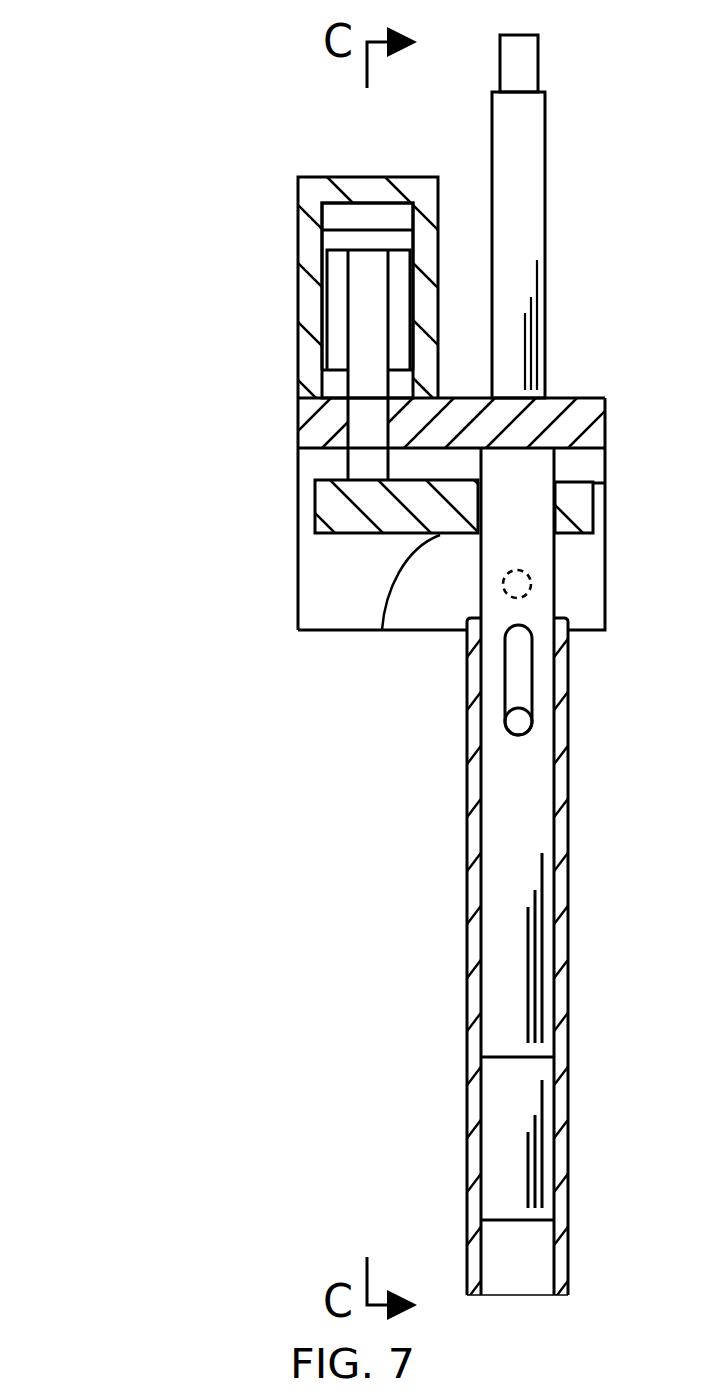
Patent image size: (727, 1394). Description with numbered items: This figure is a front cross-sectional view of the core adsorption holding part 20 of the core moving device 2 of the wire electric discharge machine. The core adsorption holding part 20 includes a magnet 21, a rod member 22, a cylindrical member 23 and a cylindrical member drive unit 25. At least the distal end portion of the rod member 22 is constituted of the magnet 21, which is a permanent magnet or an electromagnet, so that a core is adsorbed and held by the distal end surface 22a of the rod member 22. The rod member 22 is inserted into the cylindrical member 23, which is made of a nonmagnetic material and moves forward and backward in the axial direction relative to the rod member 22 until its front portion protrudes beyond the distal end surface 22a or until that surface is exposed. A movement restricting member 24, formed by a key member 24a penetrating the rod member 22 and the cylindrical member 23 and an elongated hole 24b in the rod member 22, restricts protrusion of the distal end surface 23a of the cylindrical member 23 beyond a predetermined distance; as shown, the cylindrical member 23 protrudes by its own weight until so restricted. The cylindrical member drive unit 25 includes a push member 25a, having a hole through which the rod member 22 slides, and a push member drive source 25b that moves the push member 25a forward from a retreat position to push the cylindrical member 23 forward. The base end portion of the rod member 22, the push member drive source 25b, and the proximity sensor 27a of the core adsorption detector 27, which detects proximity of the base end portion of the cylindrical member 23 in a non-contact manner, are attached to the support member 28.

The core moving device 2 is at (230, 125).
The core adsorption holding part 20 is at (298, 137).
The magnet 21 is at (512, 1148).
The rod member 22 is at (512, 1117).
The distal end surface of the rod member 22a is at (512, 1227).
The cylindrical member 23 is at (465, 957).
The distal end surface of the cylindrical member 23a is at (467, 1303).
The movement restricting member 24 is at (382, 751).
The key member 24a is at (518, 723).
The elongated hole 24b is at (518, 672).
The cylindrical member drive unit 25 is at (329, 374).
The push member 25a is at (316, 507).
The push member drive source 25b is at (298, 238).
The core adsorption detector 27 is at (310, 871).
The proximity sensor 27a is at (518, 584).
The support member 28 is at (298, 430).